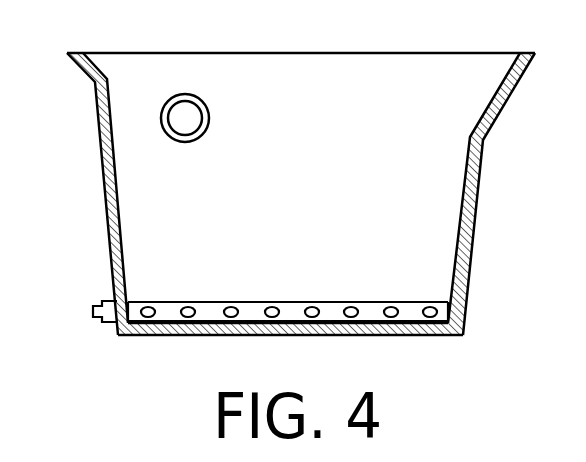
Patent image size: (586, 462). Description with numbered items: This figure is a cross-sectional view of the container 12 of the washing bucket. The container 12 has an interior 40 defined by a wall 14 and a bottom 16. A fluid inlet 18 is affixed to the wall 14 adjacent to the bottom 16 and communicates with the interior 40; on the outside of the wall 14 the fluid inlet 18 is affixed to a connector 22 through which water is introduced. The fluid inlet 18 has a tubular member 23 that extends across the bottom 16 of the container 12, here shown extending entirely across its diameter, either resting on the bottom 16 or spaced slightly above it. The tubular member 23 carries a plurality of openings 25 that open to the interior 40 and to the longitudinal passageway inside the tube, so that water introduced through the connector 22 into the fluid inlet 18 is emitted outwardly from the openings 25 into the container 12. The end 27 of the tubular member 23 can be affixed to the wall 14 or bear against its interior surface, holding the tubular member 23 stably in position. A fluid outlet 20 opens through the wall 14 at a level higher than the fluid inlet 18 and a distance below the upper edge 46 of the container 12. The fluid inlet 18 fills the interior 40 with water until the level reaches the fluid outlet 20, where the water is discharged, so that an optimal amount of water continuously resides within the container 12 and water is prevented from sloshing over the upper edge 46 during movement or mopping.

The container 12 is at (475, 221).
The wall 14 is at (113, 250).
The bottom 16 is at (410, 336).
The fluid inlet 18 is at (142, 300).
The fluid outlet 20 is at (208, 121).
The connector 22 is at (97, 323).
The tubular member 23 is at (263, 302).
The plurality of openings 25 is at (233, 305).
The end of the tubular member 27 is at (441, 300).
The interior 40 is at (334, 206).
The upper edge 46 is at (487, 53).